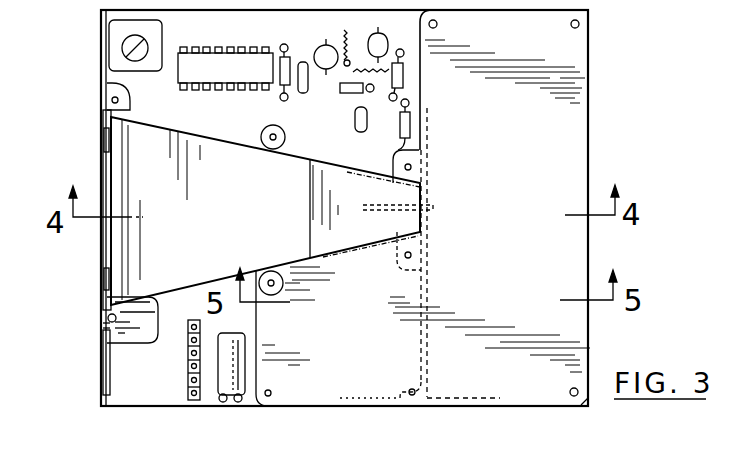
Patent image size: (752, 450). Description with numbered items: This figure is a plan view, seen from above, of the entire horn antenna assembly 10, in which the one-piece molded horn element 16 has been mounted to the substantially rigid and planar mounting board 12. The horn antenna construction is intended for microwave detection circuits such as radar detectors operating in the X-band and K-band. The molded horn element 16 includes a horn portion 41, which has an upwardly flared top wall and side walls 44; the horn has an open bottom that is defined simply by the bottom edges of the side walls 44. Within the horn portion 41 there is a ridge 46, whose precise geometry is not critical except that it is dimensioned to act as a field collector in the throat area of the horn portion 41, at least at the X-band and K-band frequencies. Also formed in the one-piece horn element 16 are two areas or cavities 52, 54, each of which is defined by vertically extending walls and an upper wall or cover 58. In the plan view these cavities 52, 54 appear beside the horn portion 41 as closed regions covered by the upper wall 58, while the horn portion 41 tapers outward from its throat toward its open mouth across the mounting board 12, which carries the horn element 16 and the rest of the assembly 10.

The assembly 10 is at (80, 296).
The mounting board 12 is at (125, 358).
The one-piece molded horn element 16 is at (196, 205).
The horn portion 41 is at (132, 148).
The side walls 44 is at (235, 141).
The ridge 46 is at (433, 205).
The cavity 52 is at (570, 125).
The cavity 54 is at (337, 378).
The upper wall or cover 58 is at (488, 156).